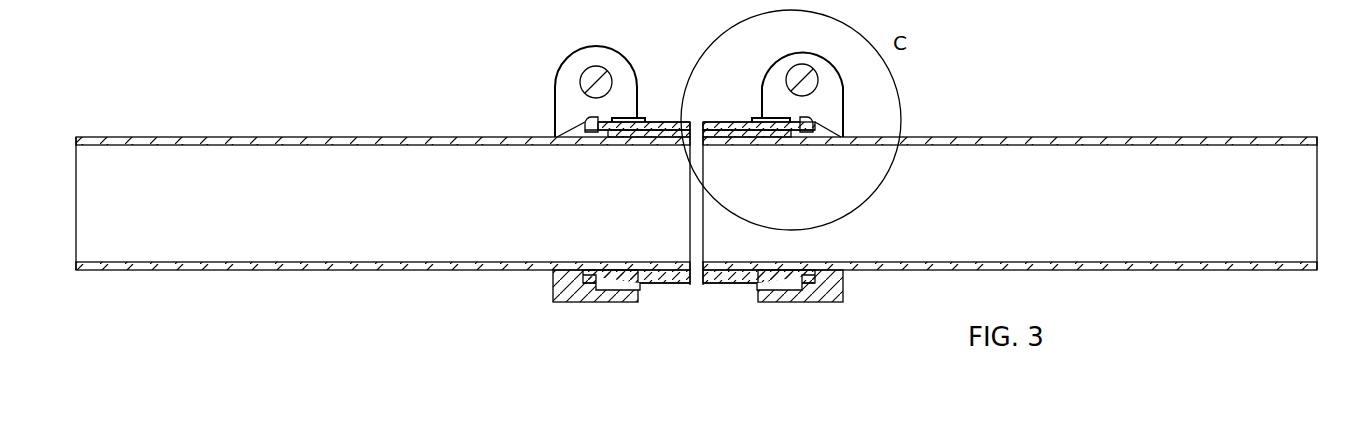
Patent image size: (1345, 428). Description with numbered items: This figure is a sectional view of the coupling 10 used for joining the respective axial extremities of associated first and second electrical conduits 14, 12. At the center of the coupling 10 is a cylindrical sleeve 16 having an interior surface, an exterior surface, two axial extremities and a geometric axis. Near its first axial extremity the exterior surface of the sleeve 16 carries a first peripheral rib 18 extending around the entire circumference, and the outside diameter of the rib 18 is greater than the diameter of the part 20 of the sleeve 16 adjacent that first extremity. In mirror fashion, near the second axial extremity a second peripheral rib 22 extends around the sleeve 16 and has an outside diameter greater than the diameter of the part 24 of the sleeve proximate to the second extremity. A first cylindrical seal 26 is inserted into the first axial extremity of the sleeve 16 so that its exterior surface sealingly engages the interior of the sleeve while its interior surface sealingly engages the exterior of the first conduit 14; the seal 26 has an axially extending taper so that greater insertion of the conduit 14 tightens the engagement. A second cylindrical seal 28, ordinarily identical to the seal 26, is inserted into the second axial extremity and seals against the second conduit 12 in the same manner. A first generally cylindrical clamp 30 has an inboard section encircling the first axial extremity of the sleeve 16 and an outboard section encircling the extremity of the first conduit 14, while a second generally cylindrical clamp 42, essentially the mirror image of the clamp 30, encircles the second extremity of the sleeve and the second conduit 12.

The coupling 10 is at (670, 312).
The second electrical conduit 12 is at (197, 137).
The first electrical conduit 14 is at (1172, 271).
The cylindrical sleeve 16 is at (700, 316).
The first peripheral rib 18 is at (808, 118).
The part of the cylindrical sleeve proximate to the first axial extremity 20 is at (788, 116).
The second peripheral rib 22 is at (586, 123).
The part of the cylindrical sleeve proximate to the second axial extremity 24 is at (632, 125).
The first cylindrical seal 26 is at (740, 140).
The second cylindrical seal 28 is at (680, 127).
The first generally cylindrical clamp 30 is at (815, 48).
The second generally cylindrical clamp 42 is at (555, 92).